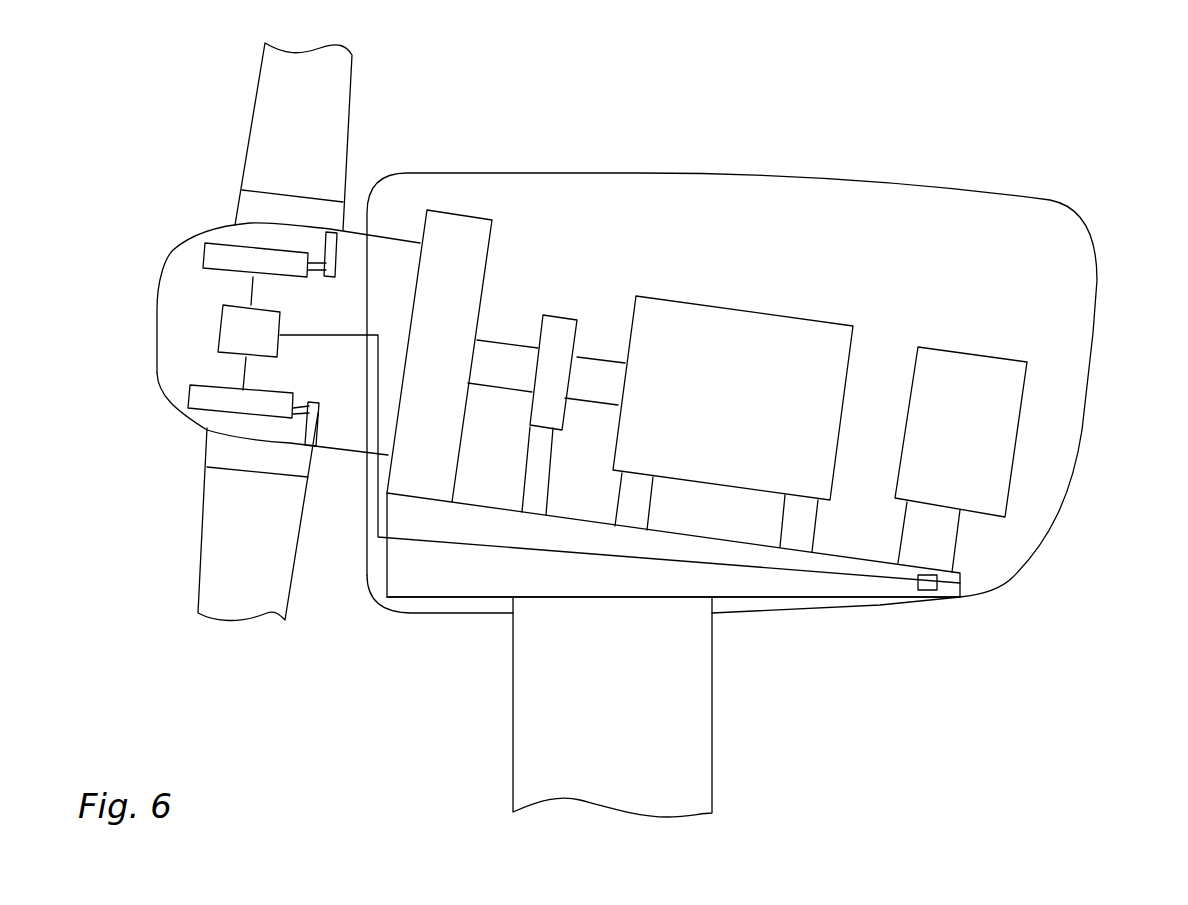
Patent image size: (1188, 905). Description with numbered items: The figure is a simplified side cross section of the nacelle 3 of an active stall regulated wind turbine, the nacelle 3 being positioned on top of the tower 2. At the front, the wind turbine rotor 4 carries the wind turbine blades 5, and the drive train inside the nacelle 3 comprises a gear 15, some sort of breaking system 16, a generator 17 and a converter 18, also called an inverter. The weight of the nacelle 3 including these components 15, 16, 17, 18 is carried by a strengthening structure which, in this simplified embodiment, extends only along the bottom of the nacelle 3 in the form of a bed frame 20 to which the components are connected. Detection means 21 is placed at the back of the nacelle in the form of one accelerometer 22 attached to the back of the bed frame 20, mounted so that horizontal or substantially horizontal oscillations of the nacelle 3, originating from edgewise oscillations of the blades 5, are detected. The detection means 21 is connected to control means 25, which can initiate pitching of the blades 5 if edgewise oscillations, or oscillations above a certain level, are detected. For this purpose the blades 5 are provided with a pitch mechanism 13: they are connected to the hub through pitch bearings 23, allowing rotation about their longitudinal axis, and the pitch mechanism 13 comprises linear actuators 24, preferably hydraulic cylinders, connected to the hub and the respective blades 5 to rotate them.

The tower 2 is at (683, 773).
The wind turbine nacelle 3 is at (1127, 208).
The wind turbine rotor 4 is at (240, 235).
The wind turbine blades 5 is at (317, 130).
The pitch mechanism 13 is at (310, 413).
The gear 15 is at (457, 243).
The breaking system 16 is at (560, 337).
The generator 17 is at (700, 348).
The converter 18 is at (978, 397).
The bed frame 20 is at (757, 587).
The detection means 21 is at (930, 590).
The accelerometer 22 is at (963, 582).
The pitch bearings 23 is at (230, 472).
The linear actuators 24 is at (218, 258).
The control means 25 is at (233, 327).